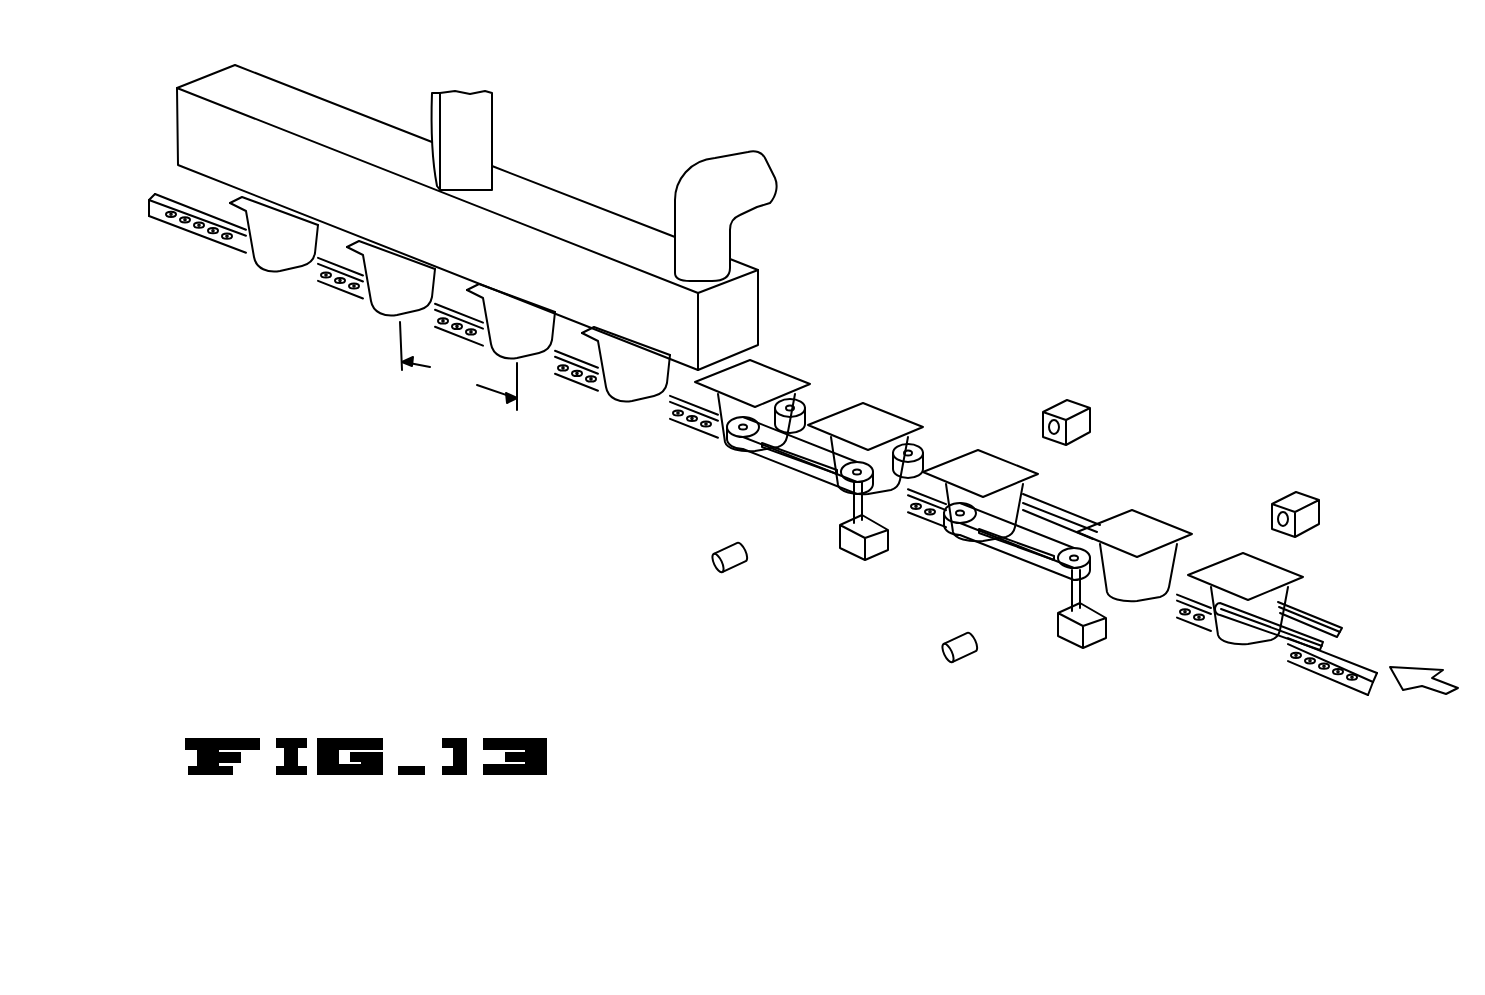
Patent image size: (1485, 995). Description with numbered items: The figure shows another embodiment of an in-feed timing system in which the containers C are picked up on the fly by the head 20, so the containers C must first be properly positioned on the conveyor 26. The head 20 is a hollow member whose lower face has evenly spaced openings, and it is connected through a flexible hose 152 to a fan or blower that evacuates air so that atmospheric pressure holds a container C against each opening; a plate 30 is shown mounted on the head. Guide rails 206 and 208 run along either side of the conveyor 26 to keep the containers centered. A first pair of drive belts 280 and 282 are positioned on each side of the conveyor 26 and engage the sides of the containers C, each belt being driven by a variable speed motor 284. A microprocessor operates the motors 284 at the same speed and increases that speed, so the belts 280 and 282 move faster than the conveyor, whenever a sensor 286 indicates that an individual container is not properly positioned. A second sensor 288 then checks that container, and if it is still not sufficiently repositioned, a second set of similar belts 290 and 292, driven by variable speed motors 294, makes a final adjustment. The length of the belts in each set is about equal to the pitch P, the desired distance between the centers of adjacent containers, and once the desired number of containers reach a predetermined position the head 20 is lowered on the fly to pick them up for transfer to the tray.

The head 20 is at (192, 123).
The conveyor 26 is at (192, 225).
The plate 30 is at (483, 107).
The flexible hose 152 is at (767, 175).
The container C is at (377, 297).
The pitch P is at (458, 366).
The guide rail 206 is at (1290, 640).
The guide rail 208 is at (1303, 610).
The drive belt 280 is at (1008, 552).
The drive belt 282 is at (1052, 503).
The variable speed motor 284 is at (1093, 638).
The sensor 286 is at (940, 658).
The second sensor 288 is at (710, 562).
The belt 290 is at (765, 458).
The belt 292 is at (817, 412).
The variable speed motor 294 is at (853, 553).